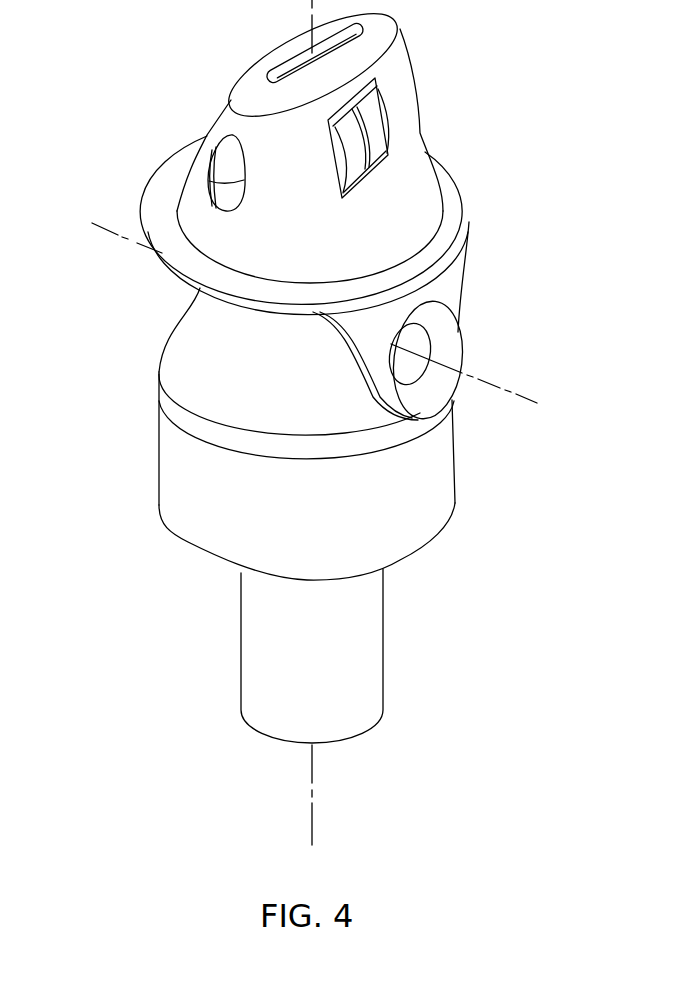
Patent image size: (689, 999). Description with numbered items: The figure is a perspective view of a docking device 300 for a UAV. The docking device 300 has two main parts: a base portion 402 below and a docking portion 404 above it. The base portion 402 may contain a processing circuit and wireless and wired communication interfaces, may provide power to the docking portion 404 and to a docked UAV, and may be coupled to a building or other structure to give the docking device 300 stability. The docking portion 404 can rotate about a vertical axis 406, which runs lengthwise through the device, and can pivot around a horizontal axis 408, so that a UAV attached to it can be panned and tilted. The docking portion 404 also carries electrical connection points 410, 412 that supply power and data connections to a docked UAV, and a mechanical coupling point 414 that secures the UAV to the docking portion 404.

The docking device 300 is at (118, 43).
The base portion 402 is at (431, 538).
The docking portion 404 is at (462, 280).
The vertical axis 406 is at (314, 813).
The horizontal axis 408 is at (514, 396).
The electrical connection point 410 is at (388, 104).
The electrical connection point 412 is at (290, 50).
The mechanical coupling point 414 is at (222, 198).